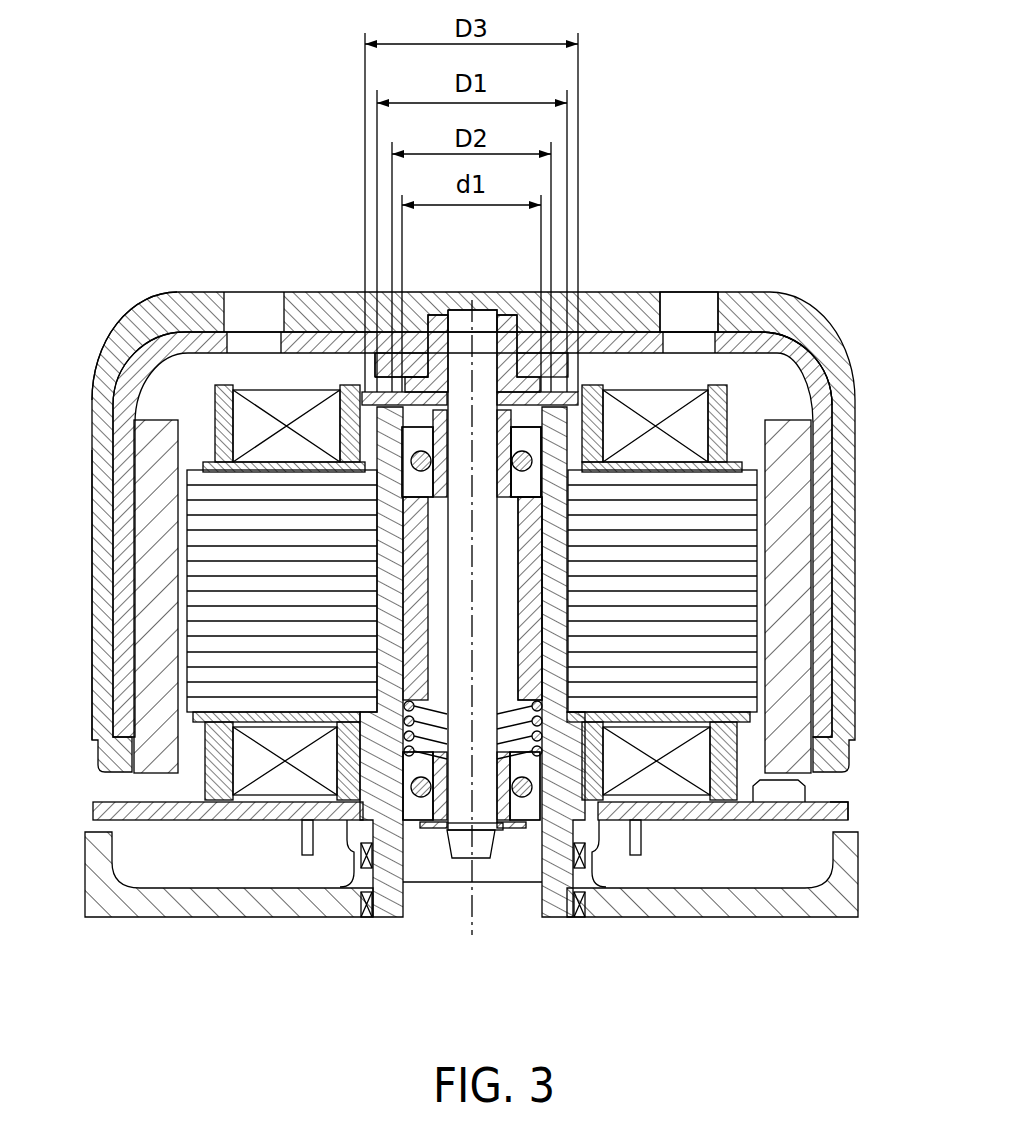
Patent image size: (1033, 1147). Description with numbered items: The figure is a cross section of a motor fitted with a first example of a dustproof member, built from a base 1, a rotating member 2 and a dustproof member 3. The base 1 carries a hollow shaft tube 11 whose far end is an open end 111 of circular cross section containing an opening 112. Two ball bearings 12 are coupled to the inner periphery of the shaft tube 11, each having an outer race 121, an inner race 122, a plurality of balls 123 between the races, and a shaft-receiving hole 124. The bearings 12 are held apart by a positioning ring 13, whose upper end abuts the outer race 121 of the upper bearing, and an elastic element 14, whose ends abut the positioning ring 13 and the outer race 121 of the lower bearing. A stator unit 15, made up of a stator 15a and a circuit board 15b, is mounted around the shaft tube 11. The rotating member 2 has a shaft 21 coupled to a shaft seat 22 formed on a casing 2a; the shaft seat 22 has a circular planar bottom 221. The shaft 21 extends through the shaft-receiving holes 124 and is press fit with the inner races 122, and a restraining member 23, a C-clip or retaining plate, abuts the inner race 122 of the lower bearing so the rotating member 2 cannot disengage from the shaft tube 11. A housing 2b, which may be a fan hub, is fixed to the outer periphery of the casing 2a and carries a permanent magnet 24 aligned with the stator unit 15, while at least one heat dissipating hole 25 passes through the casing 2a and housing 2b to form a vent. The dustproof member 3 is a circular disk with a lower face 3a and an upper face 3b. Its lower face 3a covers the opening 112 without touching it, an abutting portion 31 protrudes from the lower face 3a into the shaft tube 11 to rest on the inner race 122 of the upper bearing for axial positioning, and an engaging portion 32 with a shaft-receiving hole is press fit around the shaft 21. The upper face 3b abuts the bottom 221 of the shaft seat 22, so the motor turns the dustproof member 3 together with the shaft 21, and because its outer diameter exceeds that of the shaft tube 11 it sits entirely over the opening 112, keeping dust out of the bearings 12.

The base 1 is at (165, 920).
The shaft tube 11 is at (378, 712).
The open end 111 is at (398, 372).
The opening 112 is at (412, 385).
The bearing 12 is at (180, 215).
The outer race 121 is at (383, 420).
The inner race 122 is at (415, 452).
The balls 123 is at (425, 413).
The shaft-receiving hole 124 is at (440, 505).
The positioning ring 13 is at (545, 735).
The elastic element 14 is at (545, 775).
The stator unit 15 is at (912, 683).
The stator 15a is at (785, 785).
The circuit board 15b is at (835, 801).
The rotating member 2 is at (614, 274).
The casing 2a is at (100, 442).
The housing 2b is at (95, 525).
The shaft 21 is at (458, 335).
The shaft seat 22 is at (505, 345).
The bottom 221 is at (540, 385).
The restraining member 23 is at (522, 822).
The permanent magnet 24 is at (790, 622).
The heat dissipating hole 25 is at (688, 300).
The dustproof member 3 is at (818, 398).
The lower face 3a is at (762, 418).
The upper face 3b is at (805, 352).
The abutting portion 31 is at (610, 445).
The engaging portion 32 is at (560, 470).